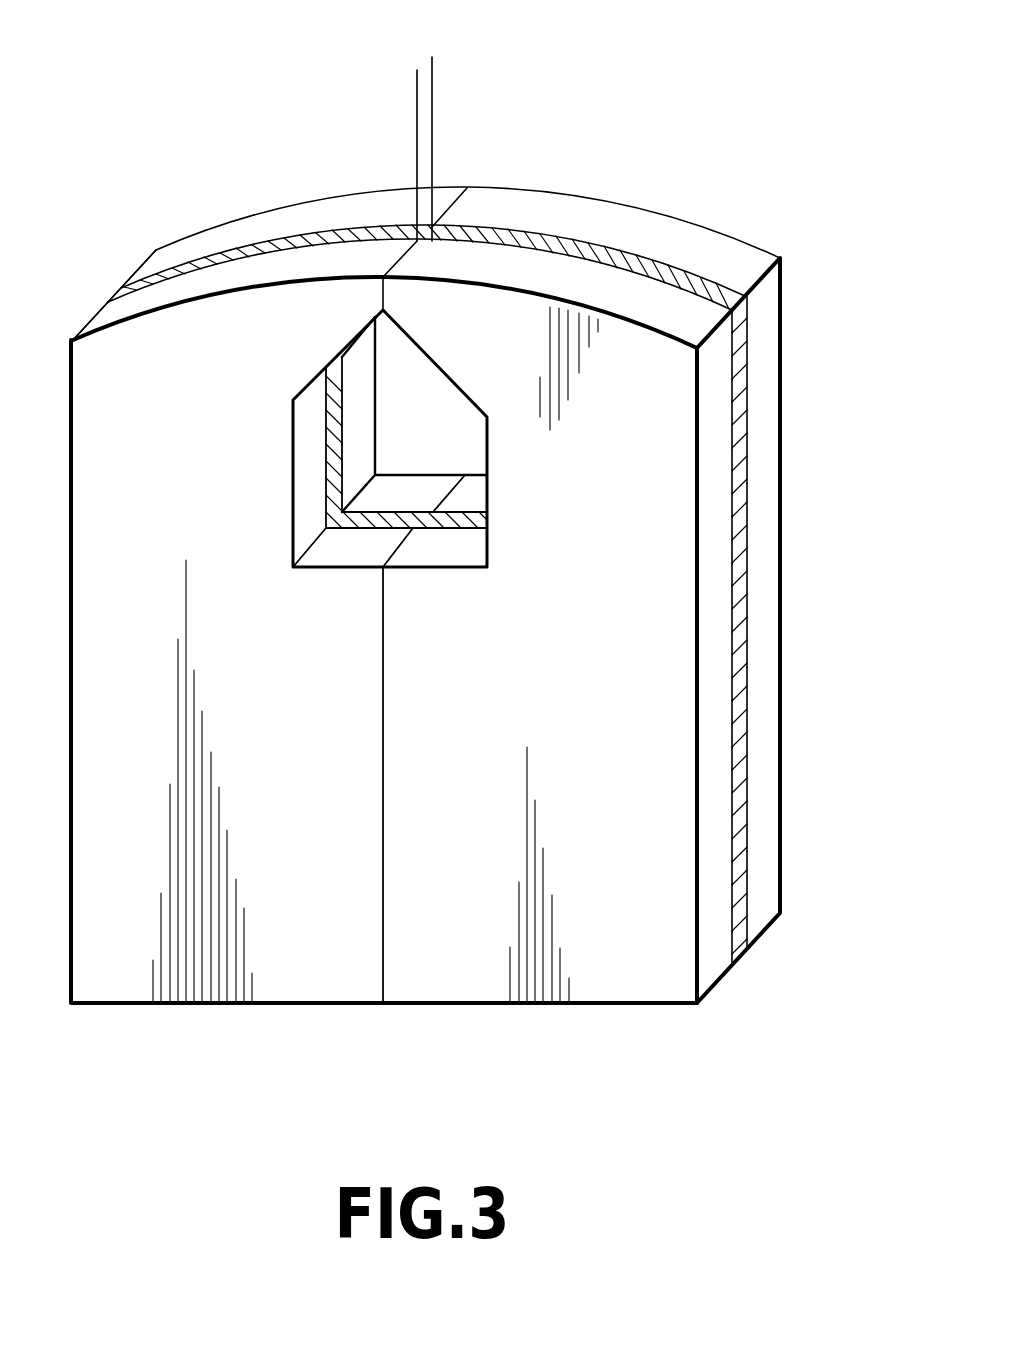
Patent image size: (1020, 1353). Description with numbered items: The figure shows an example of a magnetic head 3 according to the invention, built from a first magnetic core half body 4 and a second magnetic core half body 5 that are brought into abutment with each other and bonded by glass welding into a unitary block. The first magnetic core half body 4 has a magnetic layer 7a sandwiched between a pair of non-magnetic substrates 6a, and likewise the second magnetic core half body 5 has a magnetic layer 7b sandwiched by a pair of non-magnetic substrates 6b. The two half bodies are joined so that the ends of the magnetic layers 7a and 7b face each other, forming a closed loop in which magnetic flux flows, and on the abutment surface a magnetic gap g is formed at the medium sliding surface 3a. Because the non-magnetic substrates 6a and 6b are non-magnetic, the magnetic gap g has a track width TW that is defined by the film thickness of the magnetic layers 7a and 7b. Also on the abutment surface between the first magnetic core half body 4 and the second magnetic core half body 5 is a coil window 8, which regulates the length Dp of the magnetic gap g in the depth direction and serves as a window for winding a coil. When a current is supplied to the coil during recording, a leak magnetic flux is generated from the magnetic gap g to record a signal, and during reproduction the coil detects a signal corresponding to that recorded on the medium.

The magnetic head 3 is at (732, 134).
The medium sliding surface 3a is at (603, 213).
The first magnetic core half body 4 is at (409, 214).
The second magnetic core half body 5 is at (783, 562).
The non-magnetic substrates 6a is at (132, 312).
The non-magnetic substrates 6b is at (673, 315).
The magnetic layer 7a is at (222, 257).
The magnetic layer 7b is at (712, 288).
The coil window 8 is at (450, 447).
The magnetic gap g is at (460, 196).
The track width TW is at (370, 140).
The length of the magnetic gap in the depth direction Dp is at (397, 279).